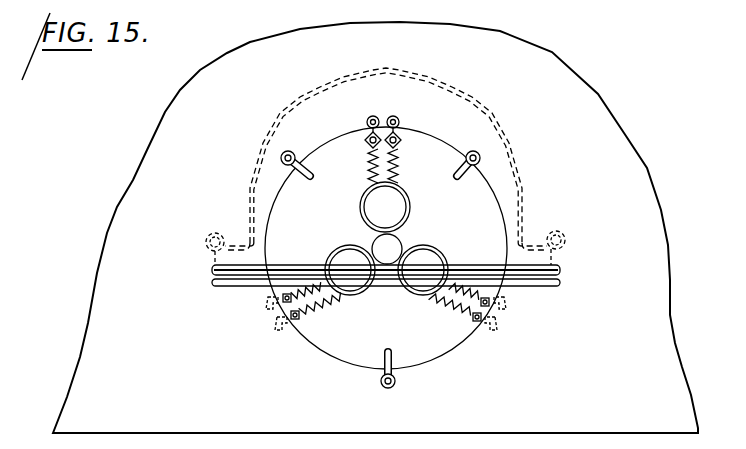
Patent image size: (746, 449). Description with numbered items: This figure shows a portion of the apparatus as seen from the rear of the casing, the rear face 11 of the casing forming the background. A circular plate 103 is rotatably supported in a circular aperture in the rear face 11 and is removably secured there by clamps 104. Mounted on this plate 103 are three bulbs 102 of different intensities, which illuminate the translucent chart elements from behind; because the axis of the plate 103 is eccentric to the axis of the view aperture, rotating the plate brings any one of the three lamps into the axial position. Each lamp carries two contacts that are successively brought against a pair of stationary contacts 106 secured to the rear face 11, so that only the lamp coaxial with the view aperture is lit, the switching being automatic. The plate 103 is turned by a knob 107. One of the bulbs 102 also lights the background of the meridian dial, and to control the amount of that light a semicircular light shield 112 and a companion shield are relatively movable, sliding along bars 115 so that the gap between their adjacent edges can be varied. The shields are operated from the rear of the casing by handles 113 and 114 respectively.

The rear face 11 is at (631, 164).
The bulbs 102 is at (372, 213).
The circular plate 103 is at (325, 340).
The clamps 104 is at (309, 178).
The stationary contacts 106 is at (394, 116).
The knob 107 is at (397, 243).
The light shield 112 is at (515, 140).
The handle 113 is at (520, 284).
The handle 114 is at (538, 267).
The bars 115 is at (206, 246).